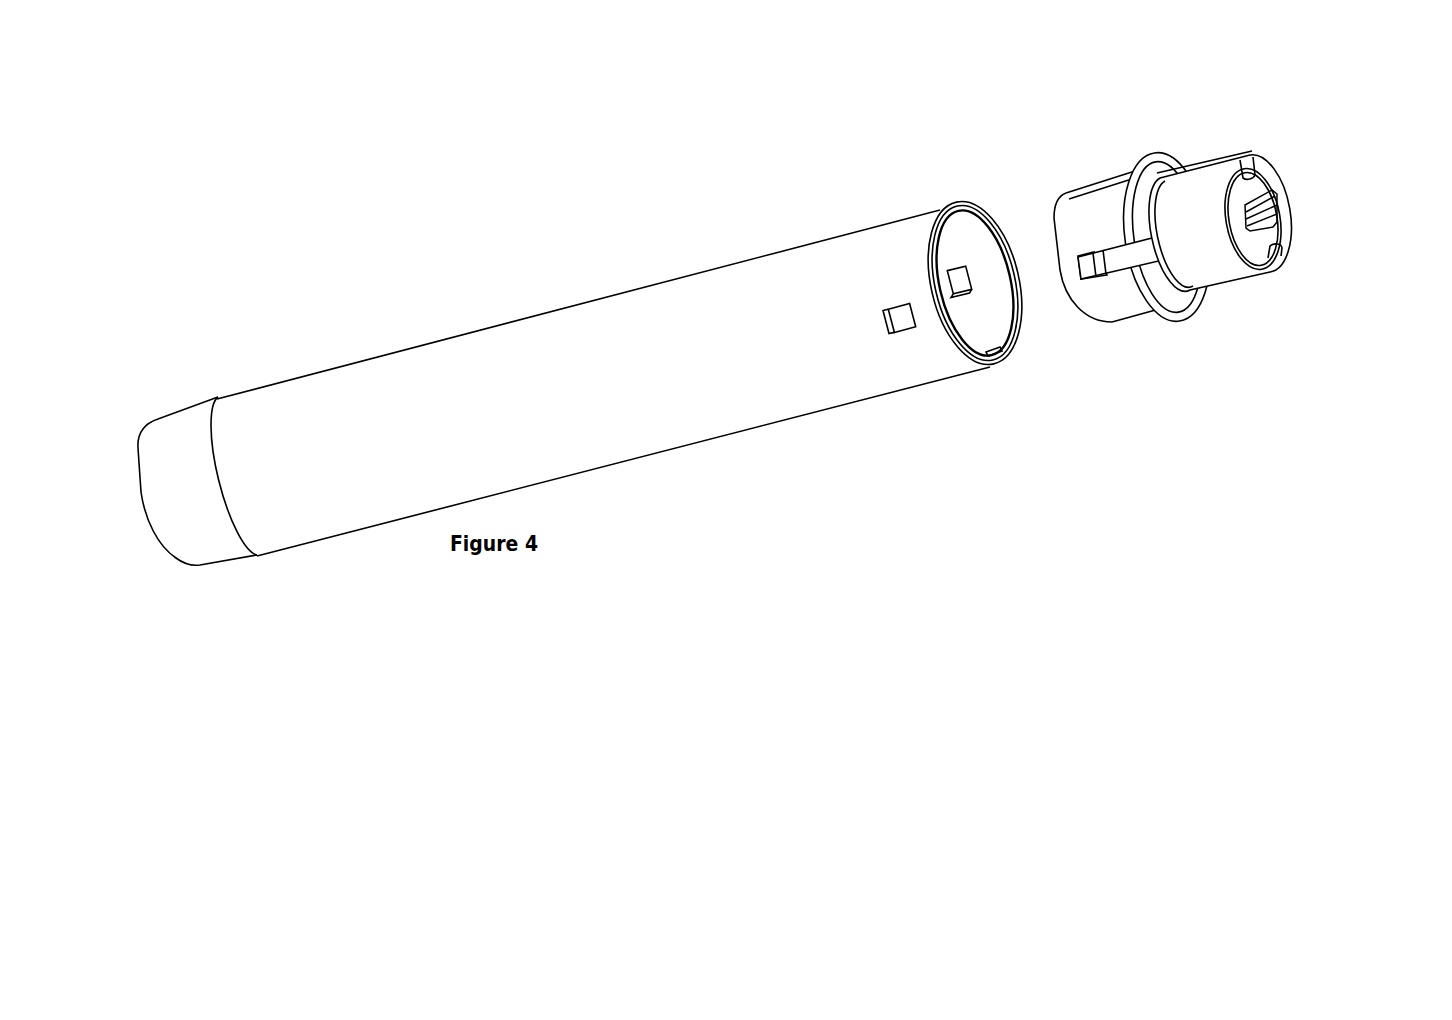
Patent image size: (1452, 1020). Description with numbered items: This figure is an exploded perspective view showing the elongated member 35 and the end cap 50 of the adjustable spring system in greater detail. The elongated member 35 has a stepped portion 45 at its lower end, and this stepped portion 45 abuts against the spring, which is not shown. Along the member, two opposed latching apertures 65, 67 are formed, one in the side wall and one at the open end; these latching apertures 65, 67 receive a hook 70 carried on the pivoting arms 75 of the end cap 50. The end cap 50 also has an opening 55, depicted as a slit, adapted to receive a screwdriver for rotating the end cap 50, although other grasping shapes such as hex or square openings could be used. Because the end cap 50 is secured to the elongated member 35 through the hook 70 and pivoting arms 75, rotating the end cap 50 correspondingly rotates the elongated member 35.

The elongated member 35 is at (372, 316).
The stepped portion 45 is at (184, 490).
The end cap 50 is at (1228, 427).
The opening 55 is at (1280, 222).
The latching aperture 65 is at (900, 323).
The latching aperture 67 is at (960, 279).
The hook 70 is at (1085, 272).
The pivoting arm 75 is at (1120, 257).